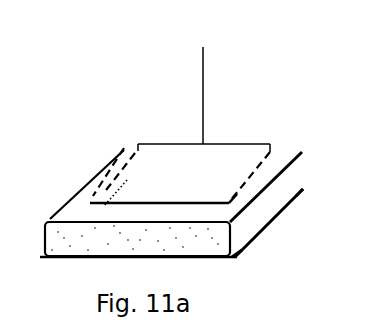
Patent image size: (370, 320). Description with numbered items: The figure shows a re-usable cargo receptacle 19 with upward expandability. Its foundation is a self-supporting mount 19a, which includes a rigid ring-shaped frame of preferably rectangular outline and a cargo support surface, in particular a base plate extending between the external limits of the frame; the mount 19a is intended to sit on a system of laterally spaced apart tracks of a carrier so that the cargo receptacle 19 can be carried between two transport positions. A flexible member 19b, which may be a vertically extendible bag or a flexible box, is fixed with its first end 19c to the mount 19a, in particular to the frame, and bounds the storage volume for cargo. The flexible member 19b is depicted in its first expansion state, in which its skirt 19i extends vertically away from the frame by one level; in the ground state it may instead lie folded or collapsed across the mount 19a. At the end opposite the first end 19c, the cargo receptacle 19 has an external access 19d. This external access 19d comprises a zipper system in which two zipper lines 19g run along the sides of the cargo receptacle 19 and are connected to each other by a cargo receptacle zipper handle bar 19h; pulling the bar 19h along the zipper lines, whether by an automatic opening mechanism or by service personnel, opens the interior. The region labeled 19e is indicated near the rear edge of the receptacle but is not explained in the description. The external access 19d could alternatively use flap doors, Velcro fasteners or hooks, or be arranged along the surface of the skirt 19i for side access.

The cargo receptacle 19 is at (127, 135).
The self-supporting mount 19a is at (103, 252).
The flexible member 19b is at (105, 217).
The first end 19c is at (239, 258).
The external access 19d is at (204, 111).
The rear edge 19e is at (298, 184).
The zipper lines 19g is at (245, 183).
The cargo receptacle zipper handle bar 19h is at (183, 207).
The skirt 19i is at (268, 202).